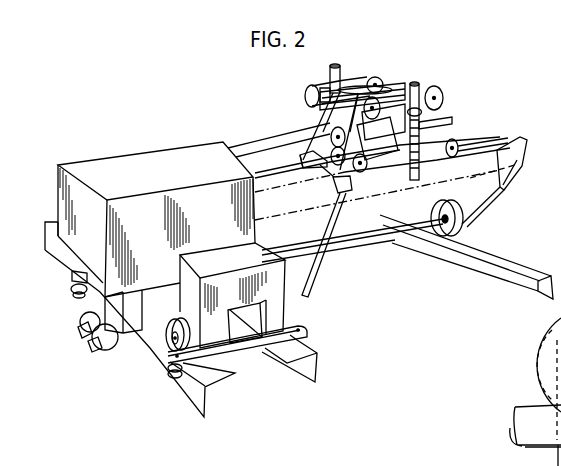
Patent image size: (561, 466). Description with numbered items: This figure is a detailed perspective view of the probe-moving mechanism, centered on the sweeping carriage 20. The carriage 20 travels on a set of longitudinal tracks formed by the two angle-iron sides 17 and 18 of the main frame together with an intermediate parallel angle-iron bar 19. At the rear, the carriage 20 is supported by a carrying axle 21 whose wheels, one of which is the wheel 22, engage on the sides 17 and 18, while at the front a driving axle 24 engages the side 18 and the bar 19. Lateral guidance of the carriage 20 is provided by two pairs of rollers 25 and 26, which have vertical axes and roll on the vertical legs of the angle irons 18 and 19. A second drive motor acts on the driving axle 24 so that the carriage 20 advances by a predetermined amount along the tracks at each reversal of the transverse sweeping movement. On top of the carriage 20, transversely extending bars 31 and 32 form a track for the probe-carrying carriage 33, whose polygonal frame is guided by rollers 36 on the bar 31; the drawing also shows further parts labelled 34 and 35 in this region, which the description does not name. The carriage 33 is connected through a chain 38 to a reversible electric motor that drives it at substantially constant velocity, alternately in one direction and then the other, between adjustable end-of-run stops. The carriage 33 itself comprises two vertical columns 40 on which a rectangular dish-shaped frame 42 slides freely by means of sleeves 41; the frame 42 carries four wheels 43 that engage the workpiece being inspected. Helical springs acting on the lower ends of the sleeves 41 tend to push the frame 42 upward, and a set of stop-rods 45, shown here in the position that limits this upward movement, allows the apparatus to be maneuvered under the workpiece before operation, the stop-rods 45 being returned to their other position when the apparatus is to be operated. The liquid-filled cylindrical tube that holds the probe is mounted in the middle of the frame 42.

The angle-iron side 17 is at (502, 260).
The angle-iron side 18 is at (206, 399).
The intermediate parallel angle-iron bar 19 is at (297, 368).
The sweeping carriage 20 is at (228, 135).
The carrying axle 21 is at (386, 237).
The wheel 22 is at (463, 212).
The driving axle 24 is at (167, 340).
The rollers 25 is at (77, 289).
The rollers 26 is at (310, 339).
The transversely extending bar 31 is at (369, 189).
The transversely extending bar 32 is at (497, 150).
The probe-carrying carriage 33 is at (410, 70).
The handle 34 is at (337, 181).
The roller 35 is at (455, 140).
The rollers 36 is at (326, 132).
The chain 38 is at (392, 209).
The vertical columns 40 is at (337, 64).
The sleeves 41 is at (421, 125).
The rectangular dish-shaped frame 42 is at (340, 95).
The wheels 43 is at (441, 92).
The stop-rods 45 is at (322, 113).